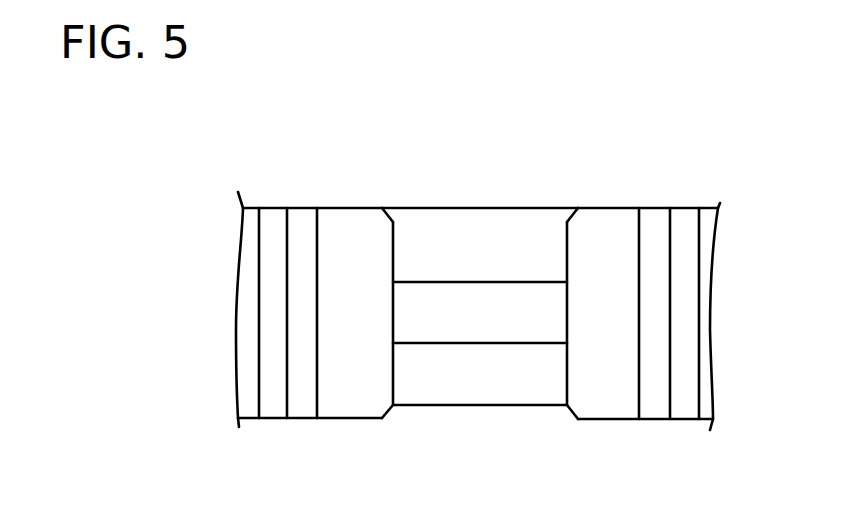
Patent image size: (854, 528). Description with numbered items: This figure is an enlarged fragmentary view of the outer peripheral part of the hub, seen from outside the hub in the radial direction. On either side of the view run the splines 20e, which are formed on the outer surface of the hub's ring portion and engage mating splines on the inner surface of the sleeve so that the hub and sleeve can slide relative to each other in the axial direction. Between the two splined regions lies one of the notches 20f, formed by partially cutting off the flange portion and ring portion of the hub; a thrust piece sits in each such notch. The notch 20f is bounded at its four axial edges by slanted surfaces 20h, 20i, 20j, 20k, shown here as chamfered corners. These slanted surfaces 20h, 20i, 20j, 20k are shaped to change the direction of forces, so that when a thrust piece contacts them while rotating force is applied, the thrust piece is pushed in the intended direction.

The splines 20e is at (271, 250).
The notch 20f is at (515, 315).
The slanted surface 20j is at (394, 208).
The slanted surface 20k is at (568, 216).
The slanted surface 20h is at (387, 419).
The slanted surface 20i is at (568, 419).